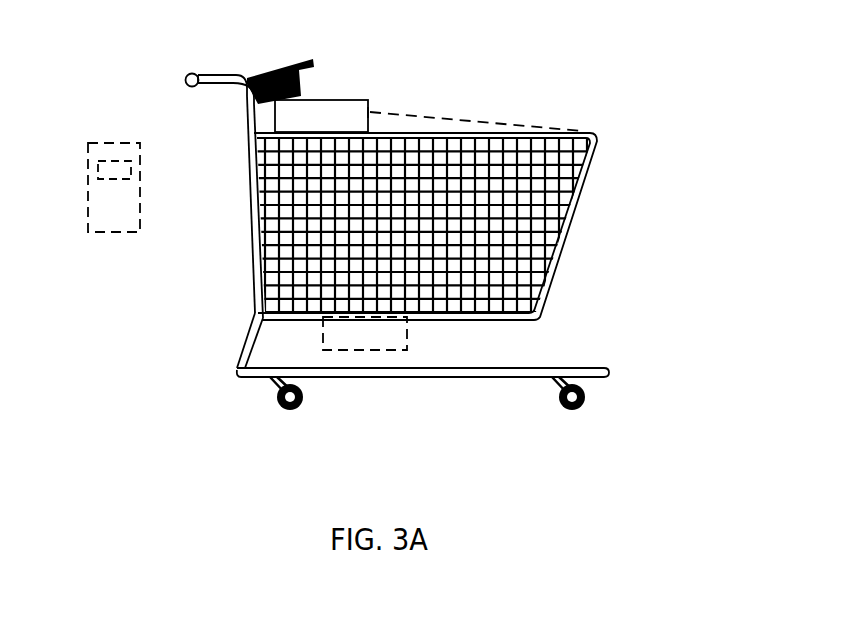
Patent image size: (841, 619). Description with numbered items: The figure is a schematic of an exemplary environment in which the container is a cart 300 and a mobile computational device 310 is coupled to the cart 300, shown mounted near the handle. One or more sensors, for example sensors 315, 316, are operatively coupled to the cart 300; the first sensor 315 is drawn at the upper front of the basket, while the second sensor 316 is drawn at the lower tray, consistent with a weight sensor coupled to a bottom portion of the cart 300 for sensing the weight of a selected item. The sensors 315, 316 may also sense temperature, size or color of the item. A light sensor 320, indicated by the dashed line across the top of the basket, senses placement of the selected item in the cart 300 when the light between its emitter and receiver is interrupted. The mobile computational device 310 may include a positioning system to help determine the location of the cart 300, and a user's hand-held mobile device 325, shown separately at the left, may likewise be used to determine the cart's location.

The cart 300 is at (614, 229).
The mobile computational device 310 is at (264, 64).
The sensor 315 is at (321, 116).
The sensor 316 is at (365, 333).
The light sensor 320 is at (470, 118).
The hand-held mobile device 325 is at (110, 140).